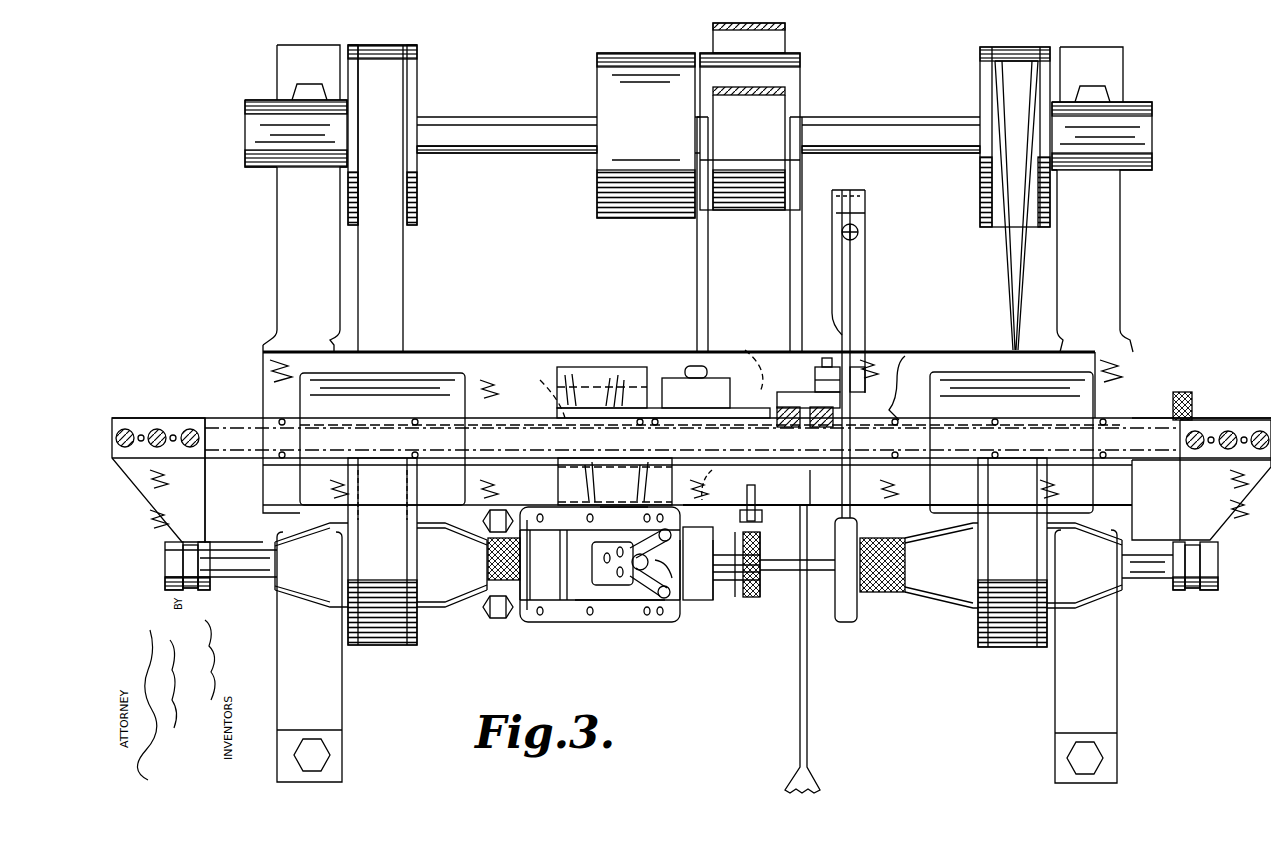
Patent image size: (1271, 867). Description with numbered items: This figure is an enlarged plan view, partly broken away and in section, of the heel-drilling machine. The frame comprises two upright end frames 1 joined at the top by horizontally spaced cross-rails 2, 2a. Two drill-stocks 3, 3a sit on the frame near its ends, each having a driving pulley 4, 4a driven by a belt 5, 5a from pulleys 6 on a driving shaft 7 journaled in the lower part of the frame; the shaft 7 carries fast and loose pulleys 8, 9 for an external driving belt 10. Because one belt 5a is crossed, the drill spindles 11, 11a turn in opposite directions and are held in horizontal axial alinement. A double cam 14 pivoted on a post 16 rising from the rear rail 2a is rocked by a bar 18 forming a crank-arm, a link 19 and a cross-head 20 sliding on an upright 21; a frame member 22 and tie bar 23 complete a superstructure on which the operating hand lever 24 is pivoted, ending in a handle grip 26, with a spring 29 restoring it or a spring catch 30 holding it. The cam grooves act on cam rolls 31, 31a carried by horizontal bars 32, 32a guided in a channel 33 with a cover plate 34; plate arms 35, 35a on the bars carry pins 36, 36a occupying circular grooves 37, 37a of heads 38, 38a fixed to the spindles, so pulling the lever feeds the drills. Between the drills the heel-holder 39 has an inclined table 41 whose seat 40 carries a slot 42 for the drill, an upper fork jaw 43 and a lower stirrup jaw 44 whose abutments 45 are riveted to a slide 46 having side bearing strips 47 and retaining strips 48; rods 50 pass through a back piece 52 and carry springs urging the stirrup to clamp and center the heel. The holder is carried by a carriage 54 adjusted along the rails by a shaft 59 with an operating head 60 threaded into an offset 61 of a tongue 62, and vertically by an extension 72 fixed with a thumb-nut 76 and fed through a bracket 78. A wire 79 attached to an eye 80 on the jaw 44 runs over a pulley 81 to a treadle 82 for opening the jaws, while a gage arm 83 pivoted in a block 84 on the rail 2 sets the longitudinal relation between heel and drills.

The upright end frame 1 is at (268, 259).
The cross-rail 2 is at (825, 505).
The rear cross-rail 2a is at (502, 356).
The drill-stock 3 is at (432, 600).
The drill-stock 3a is at (938, 597).
The driving pulley 4 is at (414, 642).
The driving pulley 4a is at (976, 642).
The belt 5 is at (404, 260).
The crossed belt 5a is at (1003, 244).
The pulley 6 is at (417, 188).
The driving shaft 7 is at (511, 150).
The fast pulley 8 is at (589, 87).
The loose pulley 9 is at (788, 72).
The external driving belt 10 is at (717, 40).
The drill spindle 11 is at (232, 566).
The drill spindle 11a is at (1156, 586).
The double cam 14 is at (600, 428).
The post 16 is at (672, 376).
The bar 18 is at (816, 373).
The link 19 is at (834, 406).
The cross-head 20 is at (787, 394).
The upright 21 is at (844, 373).
The frame member 22 is at (854, 291).
The tie bar 23 is at (854, 258).
The operating hand lever 24 is at (856, 508).
The handle grip 26 is at (854, 622).
The spring 29 is at (860, 226).
The spring catch 30 is at (825, 358).
The cam roll 31 is at (542, 388).
The cam roll 31a is at (740, 358).
The horizontal bar 32 is at (242, 424).
The horizontal bar 32a is at (1140, 424).
The horizontal channel 33 is at (233, 460).
The cover plate 34 is at (356, 432).
The plate arm 35 is at (168, 524).
The plate arm 35a is at (1239, 440).
The pin 36 is at (204, 541).
The pin 36a is at (1178, 544).
The circular groove 37 is at (196, 587).
The circular groove 37a is at (1192, 590).
The head 38 is at (166, 568).
The head 38a is at (1218, 562).
The heel-holder 39 is at (680, 602).
The seat 40 is at (602, 604).
The table 41 is at (716, 604).
The slot 42 is at (606, 590).
The upper jaw 43 is at (634, 608).
The lower jaw 44 is at (664, 610).
The abutment 45 is at (640, 510).
The slide 46 is at (548, 606).
The side bearing strip 47 is at (526, 524).
The retaining strip 48 is at (568, 517).
The rod 50 is at (498, 511).
The back piece 52 is at (524, 576).
The carriage 54 is at (604, 370).
The shaft 59 is at (924, 408).
The operating head 60 is at (1190, 404).
The offset 61 is at (911, 376).
The tongue 62 is at (702, 487).
The extension 72 is at (738, 600).
The thumb-nut 76 is at (755, 580).
The bracket 78 is at (772, 578).
The wire 79 is at (818, 570).
The eye 80 is at (686, 572).
The pulley 81 is at (776, 558).
The treadle 82 is at (790, 768).
The gage arm 83 is at (752, 492).
The block 84 is at (740, 512).